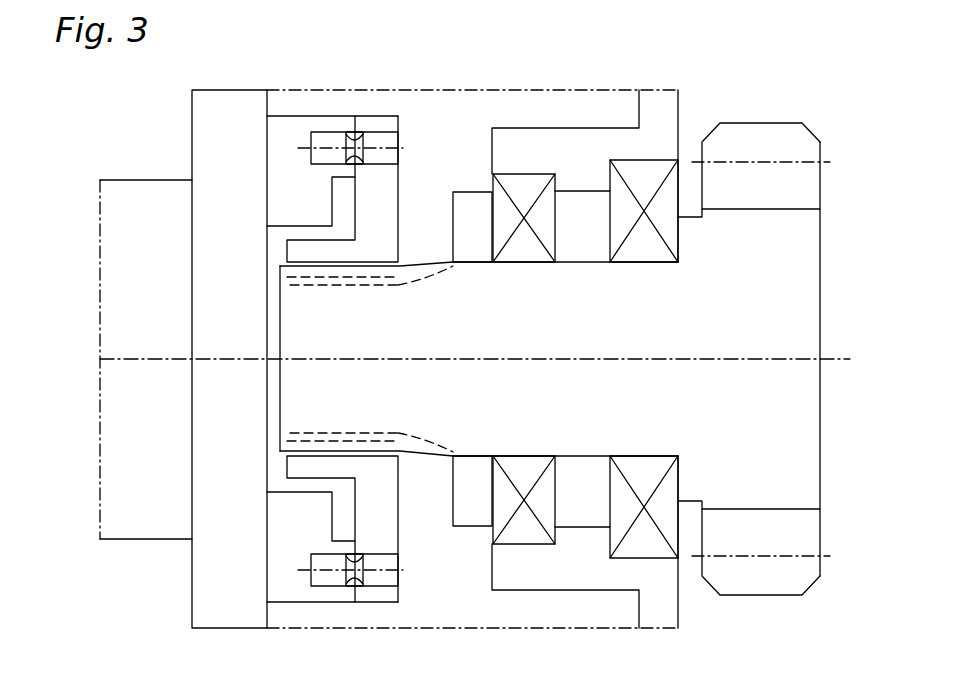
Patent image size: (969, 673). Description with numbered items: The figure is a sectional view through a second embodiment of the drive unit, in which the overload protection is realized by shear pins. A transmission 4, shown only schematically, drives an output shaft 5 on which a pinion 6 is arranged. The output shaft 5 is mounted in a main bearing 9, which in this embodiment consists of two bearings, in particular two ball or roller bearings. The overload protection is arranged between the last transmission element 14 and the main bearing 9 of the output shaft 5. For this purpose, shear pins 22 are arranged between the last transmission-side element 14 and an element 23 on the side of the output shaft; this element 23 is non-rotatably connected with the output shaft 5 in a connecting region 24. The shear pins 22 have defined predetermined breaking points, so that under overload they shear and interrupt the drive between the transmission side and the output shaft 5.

The transmission 4 is at (210, 178).
The last transmission element 14 is at (284, 140).
The shear pins 22 is at (353, 125).
The element on the side of the output shaft 23 is at (383, 192).
The connecting region 24 is at (370, 273).
The main bearing 9 is at (642, 173).
The pinion 6 is at (802, 192).
The output shaft 5 is at (798, 342).